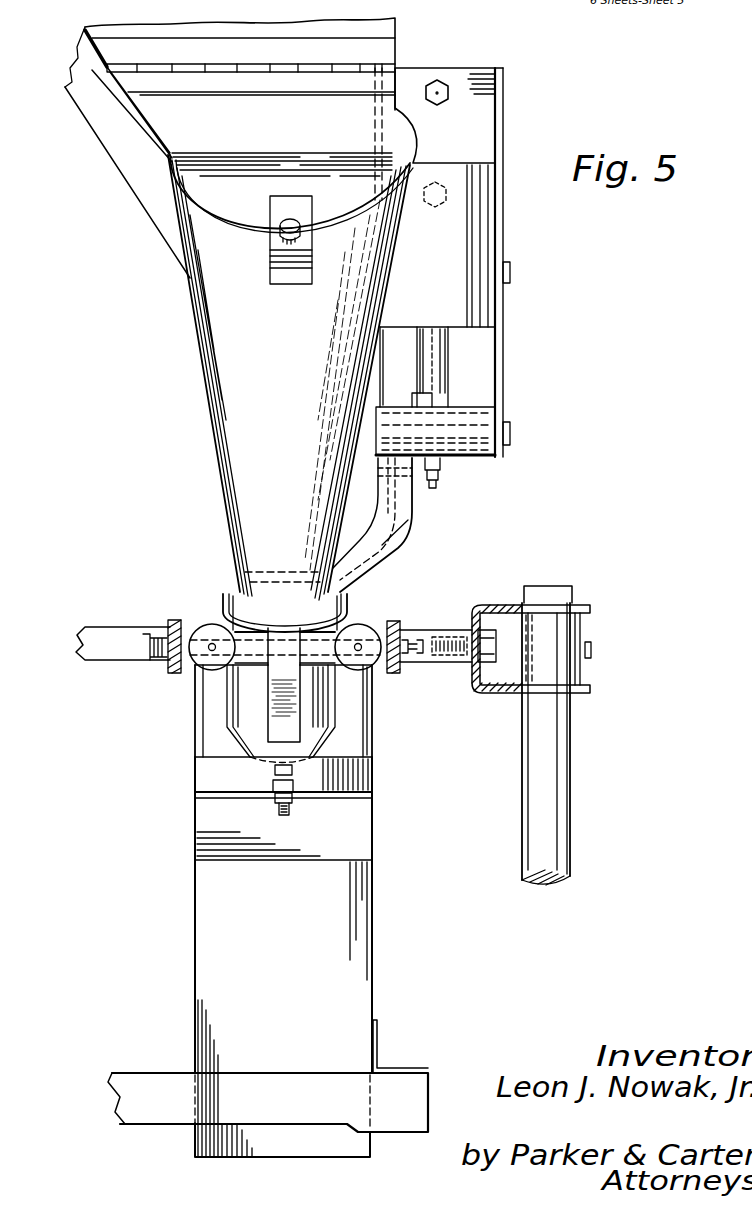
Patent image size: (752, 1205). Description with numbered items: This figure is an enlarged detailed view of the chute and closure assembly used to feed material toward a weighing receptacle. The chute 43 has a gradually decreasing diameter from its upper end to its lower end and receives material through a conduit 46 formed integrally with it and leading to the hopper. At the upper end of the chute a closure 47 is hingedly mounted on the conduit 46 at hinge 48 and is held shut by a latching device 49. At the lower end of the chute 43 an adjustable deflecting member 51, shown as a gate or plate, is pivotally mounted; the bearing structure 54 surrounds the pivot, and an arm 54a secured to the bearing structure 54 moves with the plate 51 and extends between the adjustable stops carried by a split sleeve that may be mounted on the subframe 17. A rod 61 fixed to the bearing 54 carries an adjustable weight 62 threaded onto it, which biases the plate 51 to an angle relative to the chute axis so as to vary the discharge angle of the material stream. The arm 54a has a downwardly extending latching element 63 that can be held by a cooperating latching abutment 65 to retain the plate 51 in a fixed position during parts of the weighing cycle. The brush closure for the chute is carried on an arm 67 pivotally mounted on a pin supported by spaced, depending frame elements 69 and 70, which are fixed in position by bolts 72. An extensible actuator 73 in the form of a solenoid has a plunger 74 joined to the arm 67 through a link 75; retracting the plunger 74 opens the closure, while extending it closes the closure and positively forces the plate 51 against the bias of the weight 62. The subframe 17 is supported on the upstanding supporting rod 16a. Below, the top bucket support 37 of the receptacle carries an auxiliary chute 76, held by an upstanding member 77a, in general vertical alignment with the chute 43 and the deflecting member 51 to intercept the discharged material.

The supporting rod 16a is at (570, 740).
The subframe 17 is at (100, 628).
The top bucket support 37 is at (418, 1093).
The chute 43 is at (210, 362).
The conduit 46 is at (103, 138).
The closure 47 is at (193, 189).
The hinge 48 is at (363, 68).
The latching device 49 is at (284, 231).
The deflecting member 51 is at (240, 730).
The bearing structure 54 is at (243, 664).
The arm 54a is at (279, 630).
The rod 61 is at (211, 644).
The adjustable weight 62 is at (208, 669).
The latching element 63 is at (277, 734).
The latching abutment 65 is at (293, 771).
The arm 67 is at (405, 530).
The frame element 69 is at (497, 339).
The frame element 70 is at (470, 127).
The bolt 72 is at (439, 83).
The extensible actuator 73 is at (478, 230).
The plunger 74 is at (446, 362).
The link 75 is at (437, 485).
The auxiliary chute 76 is at (200, 925).
The upstanding member 77a is at (378, 1042).